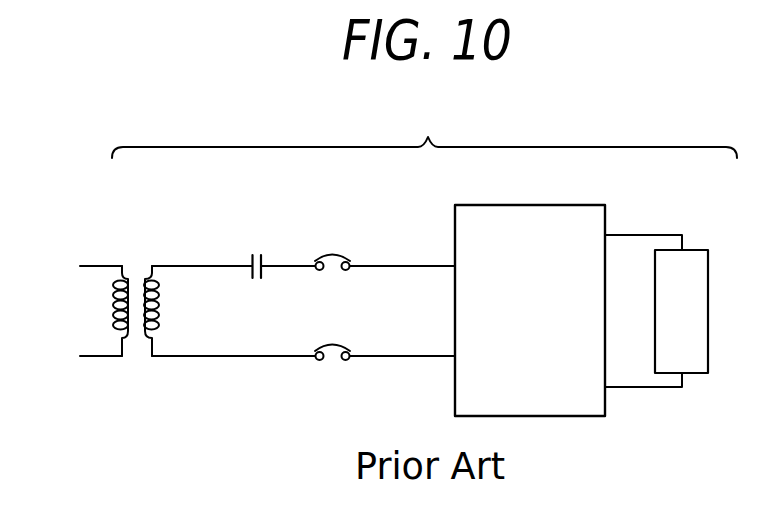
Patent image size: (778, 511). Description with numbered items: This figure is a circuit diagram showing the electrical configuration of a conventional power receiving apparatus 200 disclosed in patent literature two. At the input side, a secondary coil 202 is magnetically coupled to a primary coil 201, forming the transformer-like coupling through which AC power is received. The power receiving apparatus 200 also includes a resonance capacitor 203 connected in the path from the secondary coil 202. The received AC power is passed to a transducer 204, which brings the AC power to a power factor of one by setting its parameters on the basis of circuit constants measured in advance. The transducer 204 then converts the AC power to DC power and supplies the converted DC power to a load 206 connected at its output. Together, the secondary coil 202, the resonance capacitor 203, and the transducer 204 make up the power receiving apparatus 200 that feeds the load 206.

The power receiving apparatus 200 is at (424, 134).
The primary coil 201 is at (115, 311).
The secondary coil 202 is at (152, 275).
The resonance capacitor 203 is at (255, 252).
The transducer 204 is at (530, 205).
The load 206 is at (697, 249).